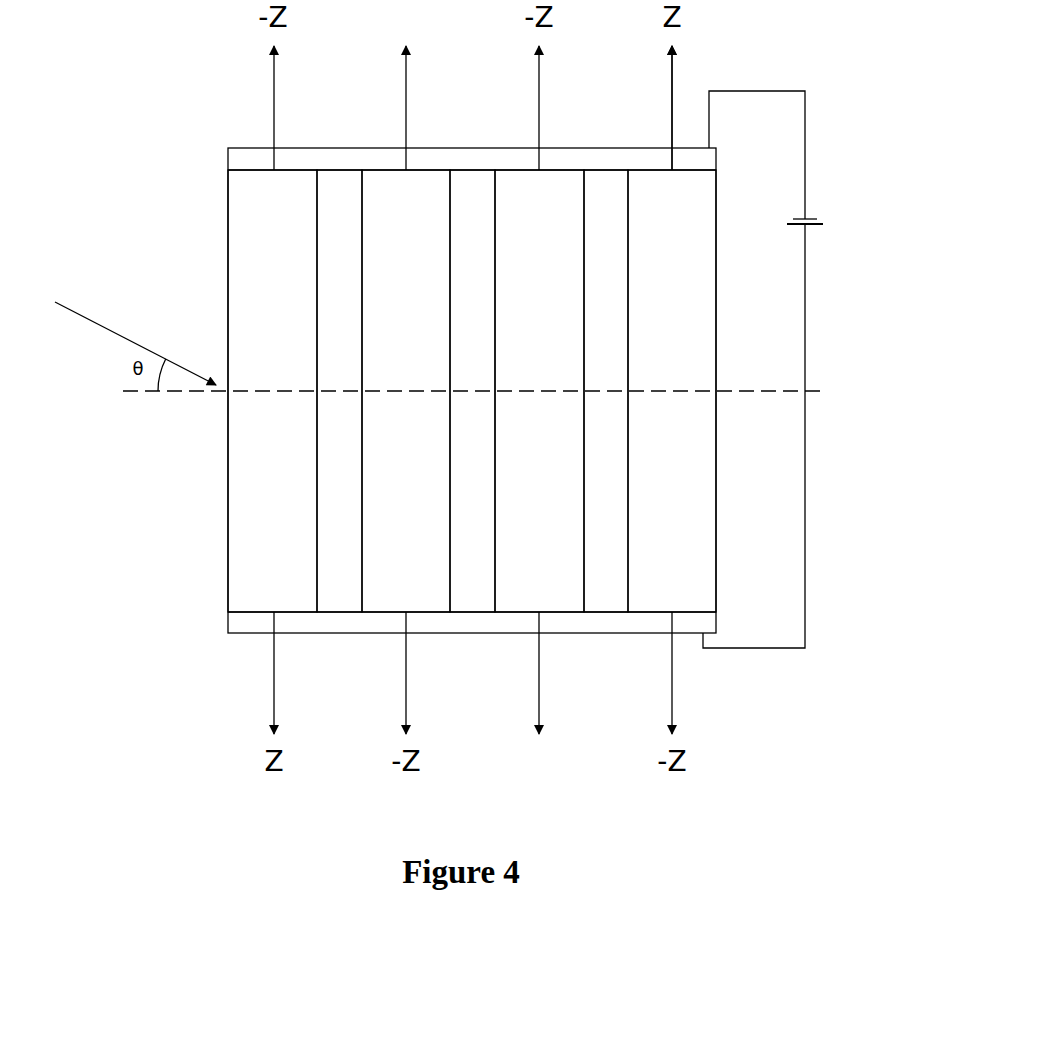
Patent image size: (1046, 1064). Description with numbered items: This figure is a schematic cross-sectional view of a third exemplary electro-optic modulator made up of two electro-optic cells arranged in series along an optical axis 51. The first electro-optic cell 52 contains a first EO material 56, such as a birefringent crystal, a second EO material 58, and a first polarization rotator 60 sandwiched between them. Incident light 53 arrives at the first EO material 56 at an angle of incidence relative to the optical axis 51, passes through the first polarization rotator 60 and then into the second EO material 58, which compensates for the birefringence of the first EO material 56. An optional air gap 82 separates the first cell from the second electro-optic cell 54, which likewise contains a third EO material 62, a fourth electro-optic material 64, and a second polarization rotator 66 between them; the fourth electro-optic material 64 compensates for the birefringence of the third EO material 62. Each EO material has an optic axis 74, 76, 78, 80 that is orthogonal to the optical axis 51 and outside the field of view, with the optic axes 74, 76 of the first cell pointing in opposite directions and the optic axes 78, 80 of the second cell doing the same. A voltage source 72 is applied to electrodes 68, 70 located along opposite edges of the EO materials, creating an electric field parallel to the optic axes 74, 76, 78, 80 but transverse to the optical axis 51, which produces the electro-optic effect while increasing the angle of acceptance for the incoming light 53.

The optical axis 51 is at (178, 393).
The first electro-optic cell 52 is at (214, 105).
The incident light 53 is at (122, 333).
The second electro-optic cell 54 is at (713, 684).
The first EO material 56 is at (255, 568).
The second EO material 58 is at (385, 592).
The first polarization rotator 60 is at (333, 232).
The third EO material 62 is at (550, 592).
The fourth electro-optic material 64 is at (687, 522).
The second polarization rotator 66 is at (605, 588).
The electrode 68 is at (473, 162).
The electrode 70 is at (253, 625).
The voltage source 72 is at (839, 242).
The optic axis 74 is at (274, 708).
The optic axis 76 is at (407, 70).
The optic axis 78 is at (539, 708).
The optic axis 80 is at (675, 70).
The air gap 82 is at (465, 590).